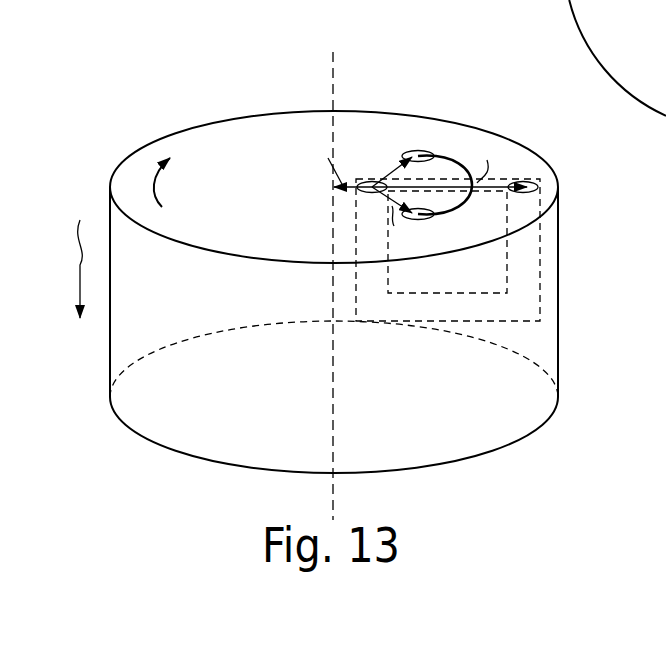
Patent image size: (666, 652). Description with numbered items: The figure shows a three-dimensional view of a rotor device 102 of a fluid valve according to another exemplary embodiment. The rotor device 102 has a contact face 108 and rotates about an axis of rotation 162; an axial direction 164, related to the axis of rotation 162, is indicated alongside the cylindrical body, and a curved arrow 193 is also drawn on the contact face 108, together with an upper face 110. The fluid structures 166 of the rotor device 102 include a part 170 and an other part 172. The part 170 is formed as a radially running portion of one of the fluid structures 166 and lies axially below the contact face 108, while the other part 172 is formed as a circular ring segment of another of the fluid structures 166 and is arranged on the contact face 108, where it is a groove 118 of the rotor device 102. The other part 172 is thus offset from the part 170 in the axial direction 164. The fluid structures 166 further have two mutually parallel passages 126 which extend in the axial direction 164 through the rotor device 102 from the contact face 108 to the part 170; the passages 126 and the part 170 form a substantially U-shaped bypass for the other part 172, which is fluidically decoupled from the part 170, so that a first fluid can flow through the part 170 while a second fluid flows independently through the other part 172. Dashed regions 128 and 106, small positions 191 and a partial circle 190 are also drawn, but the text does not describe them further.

The rotor device 102 is at (358, 257).
The top surface 110 is at (210, 155).
The contact face 108 is at (265, 130).
The axis of rotation 162 is at (333, 52).
The axial direction 164 is at (80, 255).
The rotation direction 193 is at (165, 183).
The passages 126 is at (527, 240).
The fluid structures 166 is at (400, 318).
The outer region 128 is at (487, 312).
The inner region 106 is at (383, 262).
The part 170 is at (432, 310).
The nozzle position 191 is at (430, 152).
The other part 172 is at (446, 157).
The groove 118 is at (453, 156).
The circular element 190 is at (617, 58).